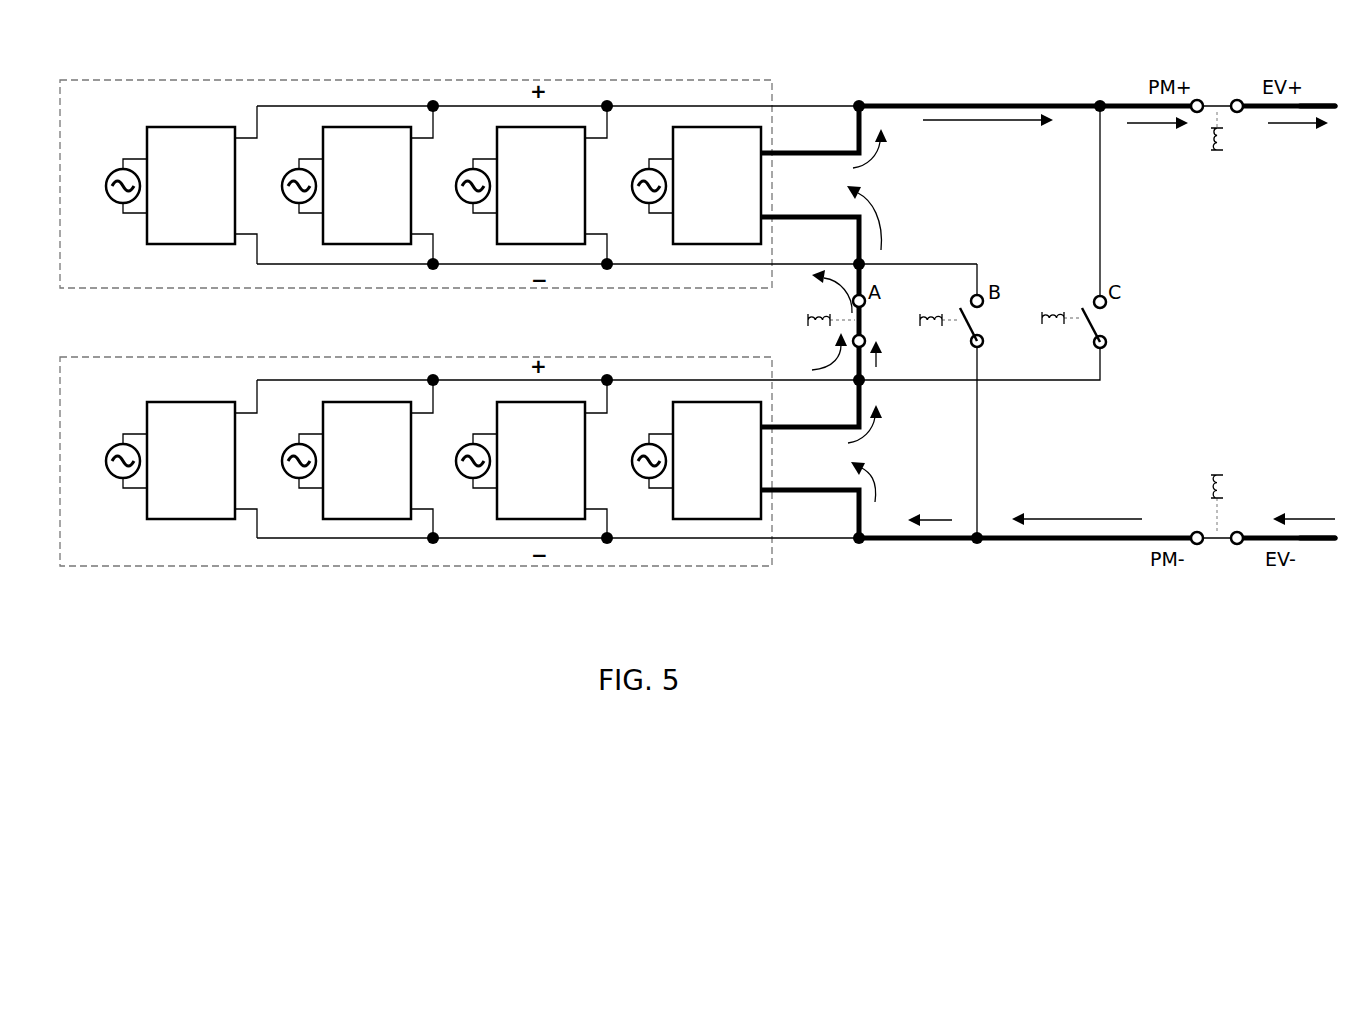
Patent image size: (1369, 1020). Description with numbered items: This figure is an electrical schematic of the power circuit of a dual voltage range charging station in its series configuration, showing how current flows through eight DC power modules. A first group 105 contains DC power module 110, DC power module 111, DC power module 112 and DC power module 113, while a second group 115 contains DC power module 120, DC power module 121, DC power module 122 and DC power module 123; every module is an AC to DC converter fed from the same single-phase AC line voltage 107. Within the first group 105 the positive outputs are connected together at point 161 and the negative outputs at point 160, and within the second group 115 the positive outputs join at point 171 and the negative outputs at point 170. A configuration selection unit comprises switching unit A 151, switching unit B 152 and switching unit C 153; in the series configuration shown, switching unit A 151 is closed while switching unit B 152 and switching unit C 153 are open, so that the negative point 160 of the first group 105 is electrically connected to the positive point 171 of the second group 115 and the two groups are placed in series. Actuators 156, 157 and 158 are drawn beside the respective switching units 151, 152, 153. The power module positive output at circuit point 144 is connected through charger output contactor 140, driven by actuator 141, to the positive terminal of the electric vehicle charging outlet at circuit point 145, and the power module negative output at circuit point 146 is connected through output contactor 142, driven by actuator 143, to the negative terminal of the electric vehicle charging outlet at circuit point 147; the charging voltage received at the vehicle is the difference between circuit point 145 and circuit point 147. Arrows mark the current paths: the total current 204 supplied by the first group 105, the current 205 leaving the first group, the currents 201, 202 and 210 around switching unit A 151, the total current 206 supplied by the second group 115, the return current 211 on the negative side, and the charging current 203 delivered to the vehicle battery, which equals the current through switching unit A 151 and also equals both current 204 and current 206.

The first group of DC power modules 105 is at (150, 80).
The second group of DC power modules 115 is at (150, 566).
The AC line voltage 107 is at (373, 314).
The DC power module 110 is at (147, 243).
The DC power module 111 is at (323, 243).
The DC power module 112 is at (497, 243).
The DC power module 113 is at (673, 243).
The DC power module 120 is at (147, 518).
The DC power module 121 is at (323, 518).
The DC power module 122 is at (497, 518).
The DC power module 123 is at (673, 518).
The positive connection point 161 is at (853, 102).
The negative connection point 160 is at (854, 260).
The positive connection point 171 is at (855, 386).
The negative connection point 170 is at (855, 532).
The power module positive output PM+ 144 is at (1097, 100).
The power module negative output PM− 146 is at (1100, 541).
The charger output contactor 140 is at (1218, 100).
The actuator 141 is at (1217, 151).
The charger output contactor 142 is at (1217, 541).
The actuator 143 is at (1217, 474).
The positive terminal of electric vehicle charging outlet EV+ 145 is at (1326, 102).
The negative terminal of electric vehicle charging outlet EV− 147 is at (1325, 541).
The switching unit A 151 is at (862, 321).
The switching unit B 152 is at (983, 325).
The switching unit C 153 is at (1102, 321).
The switch A coil 156 is at (808, 324).
The switch B coil 157 is at (933, 312).
The switch C coil 158 is at (1042, 311).
The current flow arrow 201 is at (843, 291).
The current flow arrow 202 is at (832, 361).
The charging current 203 is at (1287, 126).
The total current supplied by the first group 204 is at (1012, 123).
The current flow arrow from module 4 positive 205 is at (880, 159).
The total current supplied by the second group 206 is at (877, 436).
The current flow arrow through switch A 210 is at (877, 368).
The current flow arrow on negative bus 211 is at (927, 519).